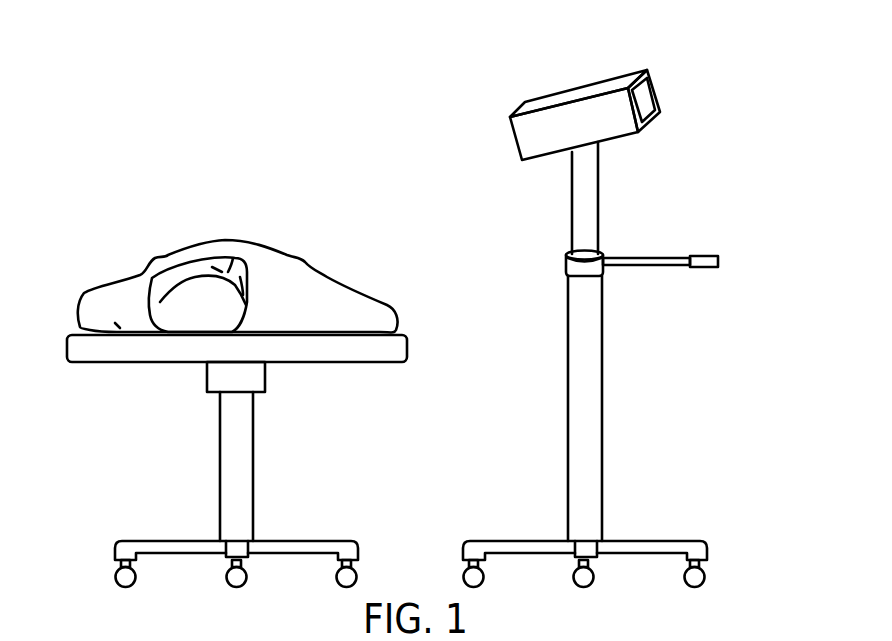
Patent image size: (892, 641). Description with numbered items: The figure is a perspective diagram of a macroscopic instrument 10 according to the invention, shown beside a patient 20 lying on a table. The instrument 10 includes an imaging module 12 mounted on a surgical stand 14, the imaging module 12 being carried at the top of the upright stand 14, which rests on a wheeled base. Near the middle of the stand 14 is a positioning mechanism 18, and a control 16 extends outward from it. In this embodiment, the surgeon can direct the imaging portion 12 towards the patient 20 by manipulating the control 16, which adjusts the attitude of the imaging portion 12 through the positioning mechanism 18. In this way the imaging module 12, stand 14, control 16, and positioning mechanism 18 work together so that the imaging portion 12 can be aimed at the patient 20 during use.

The instrument 10 is at (736, 99).
The imaging module 12 is at (647, 120).
The surgical stand 14 is at (602, 432).
The control 16 is at (705, 268).
The positioning mechanism 18 is at (603, 255).
The patient 20 is at (132, 277).